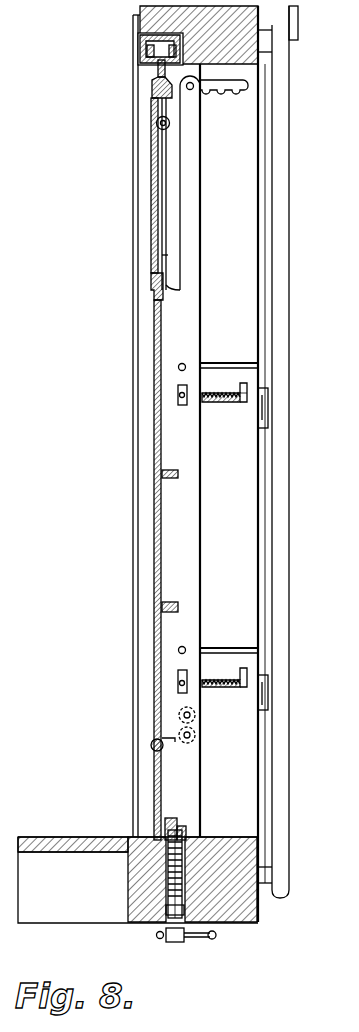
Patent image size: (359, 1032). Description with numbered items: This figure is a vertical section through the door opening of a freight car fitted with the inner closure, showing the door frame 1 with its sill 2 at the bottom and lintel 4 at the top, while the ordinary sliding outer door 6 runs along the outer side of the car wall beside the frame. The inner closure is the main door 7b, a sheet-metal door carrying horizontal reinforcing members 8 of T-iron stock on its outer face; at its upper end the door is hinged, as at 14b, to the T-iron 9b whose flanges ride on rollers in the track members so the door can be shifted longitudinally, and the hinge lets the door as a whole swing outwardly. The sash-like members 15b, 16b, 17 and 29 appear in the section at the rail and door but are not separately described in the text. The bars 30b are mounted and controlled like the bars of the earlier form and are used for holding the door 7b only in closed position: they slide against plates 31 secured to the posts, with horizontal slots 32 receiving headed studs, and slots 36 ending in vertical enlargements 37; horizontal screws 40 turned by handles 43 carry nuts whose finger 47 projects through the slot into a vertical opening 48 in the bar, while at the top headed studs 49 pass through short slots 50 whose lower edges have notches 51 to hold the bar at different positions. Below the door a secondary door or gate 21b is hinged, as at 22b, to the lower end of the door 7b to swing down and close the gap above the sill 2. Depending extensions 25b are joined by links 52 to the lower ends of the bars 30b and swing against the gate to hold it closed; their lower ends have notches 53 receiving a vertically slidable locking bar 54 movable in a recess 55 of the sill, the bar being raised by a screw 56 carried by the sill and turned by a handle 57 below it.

The door frame 1 is at (258, 920).
The sill 2 is at (234, 925).
The lintel 4 is at (250, 57).
The sliding outer door 6 is at (283, 623).
The door 7b is at (155, 549).
The horizontal reinforcing members 8 is at (178, 476).
The T-iron 9b is at (155, 68).
The hinge 14b is at (155, 123).
The arm 15b is at (160, 160).
The rail section 16b is at (150, 215).
The window sash 17 is at (131, 439).
The secondary door or gate 21b is at (153, 778).
The hinge 22b is at (153, 745).
The depending arms or extensions 25b is at (195, 785).
The sash member 29 is at (147, 463).
The bars 30b is at (205, 456).
The plates 31 is at (250, 553).
The horizontal slots 32 is at (225, 365).
The horizontal slots 36 is at (213, 401).
The vertical enlargements 37 is at (246, 385).
The horizontal screws 40 is at (222, 690).
The handles 43 is at (268, 700).
The finger 47 is at (178, 392).
The vertical opening 48 is at (178, 402).
The headed rivets or studs 49 is at (192, 90).
The short horizontal slots 50 is at (248, 88).
The notches 51 is at (238, 93).
The links 52 is at (197, 730).
The notches 53 is at (183, 822).
The locking bar 54 is at (193, 832).
The recess 55 is at (168, 876).
The screw 56 is at (168, 906).
The handle 57 is at (190, 944).